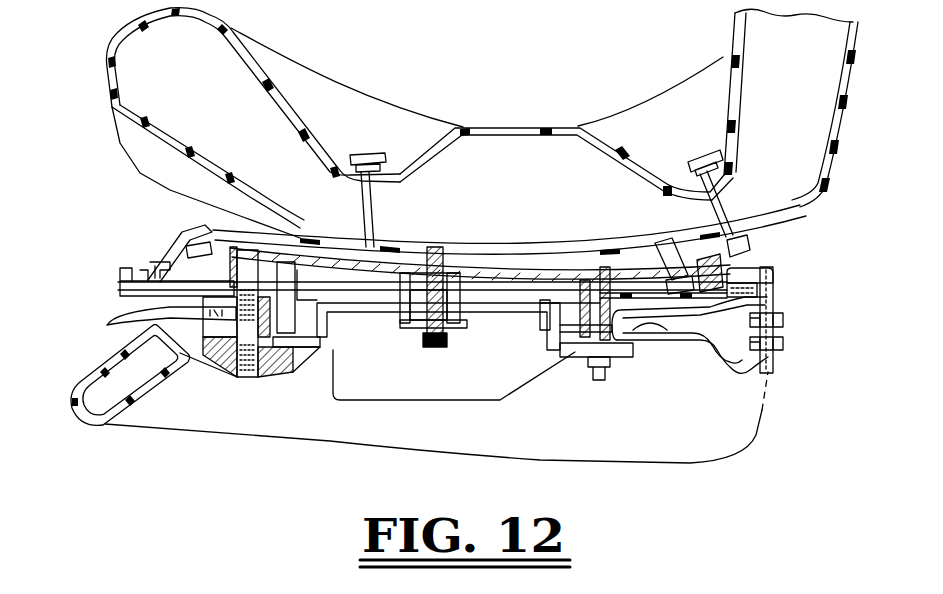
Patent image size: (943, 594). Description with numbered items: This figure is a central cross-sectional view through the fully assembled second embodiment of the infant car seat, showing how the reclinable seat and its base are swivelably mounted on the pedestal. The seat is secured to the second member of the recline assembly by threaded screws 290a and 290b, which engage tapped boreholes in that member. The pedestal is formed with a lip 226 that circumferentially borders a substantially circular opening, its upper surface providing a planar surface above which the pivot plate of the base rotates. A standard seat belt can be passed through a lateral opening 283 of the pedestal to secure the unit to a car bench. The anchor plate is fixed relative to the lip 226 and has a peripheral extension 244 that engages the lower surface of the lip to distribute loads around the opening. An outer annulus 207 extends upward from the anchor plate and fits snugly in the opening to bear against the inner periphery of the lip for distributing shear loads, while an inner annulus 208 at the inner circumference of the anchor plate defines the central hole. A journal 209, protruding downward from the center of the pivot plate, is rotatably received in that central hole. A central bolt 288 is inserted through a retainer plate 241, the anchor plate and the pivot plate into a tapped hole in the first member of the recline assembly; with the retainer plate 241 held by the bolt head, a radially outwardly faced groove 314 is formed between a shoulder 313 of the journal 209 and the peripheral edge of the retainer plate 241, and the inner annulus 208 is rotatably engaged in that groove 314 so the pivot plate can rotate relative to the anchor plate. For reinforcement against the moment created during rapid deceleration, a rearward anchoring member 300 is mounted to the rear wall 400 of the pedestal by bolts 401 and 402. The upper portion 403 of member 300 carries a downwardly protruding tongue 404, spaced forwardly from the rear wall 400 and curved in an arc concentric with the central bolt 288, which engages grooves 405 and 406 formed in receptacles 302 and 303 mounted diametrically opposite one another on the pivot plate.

The threaded screw 290a is at (366, 157).
The threaded screw 290b is at (702, 158).
The journal 209 is at (480, 245).
The outer annulus 207 is at (480, 246).
The receptacle 302 is at (718, 240).
The receptacle 303 is at (118, 277).
The groove 406 is at (131, 280).
The tongue 404 is at (747, 262).
The upper portion 403 is at (774, 278).
The groove 405 is at (750, 291).
The rearward anchoring member 300 is at (771, 305).
The bolt 401 is at (784, 324).
The bolt 402 is at (784, 346).
The rear wall 400 is at (758, 364).
The lip 226 is at (637, 345).
The peripheral extension 244 is at (632, 380).
The inner annulus 208 is at (470, 318).
The lateral opening 283 is at (500, 377).
The central bolt 288 is at (433, 345).
The groove 314 is at (400, 318).
The shoulder 313 is at (397, 323).
The retainer plate 241 is at (457, 333).